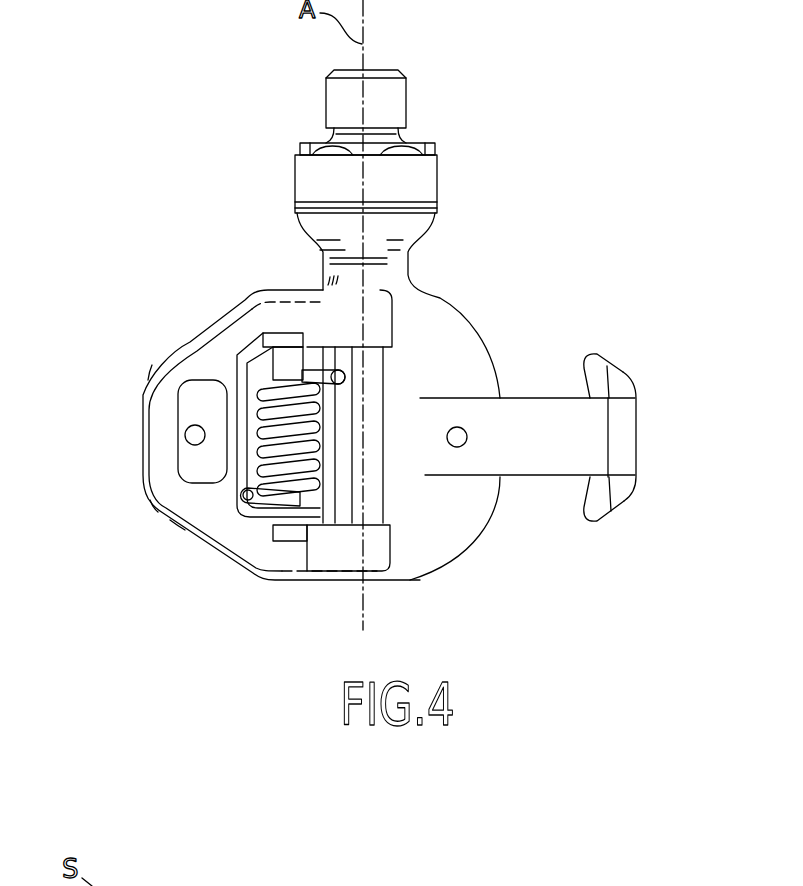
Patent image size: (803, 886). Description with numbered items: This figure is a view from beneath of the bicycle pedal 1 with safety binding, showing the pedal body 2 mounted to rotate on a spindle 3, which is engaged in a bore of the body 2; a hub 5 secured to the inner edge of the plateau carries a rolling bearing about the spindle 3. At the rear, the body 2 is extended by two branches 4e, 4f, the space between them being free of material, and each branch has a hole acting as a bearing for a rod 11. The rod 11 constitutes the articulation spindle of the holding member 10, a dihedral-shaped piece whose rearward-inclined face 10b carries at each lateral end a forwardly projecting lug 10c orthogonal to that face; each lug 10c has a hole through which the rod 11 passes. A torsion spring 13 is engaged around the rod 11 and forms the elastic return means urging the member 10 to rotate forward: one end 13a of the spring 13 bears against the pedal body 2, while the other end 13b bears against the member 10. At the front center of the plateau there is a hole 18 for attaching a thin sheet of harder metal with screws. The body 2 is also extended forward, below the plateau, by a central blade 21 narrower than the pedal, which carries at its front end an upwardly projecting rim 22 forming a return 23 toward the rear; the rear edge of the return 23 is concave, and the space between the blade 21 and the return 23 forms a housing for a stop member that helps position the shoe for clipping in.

The bicycle pedal 1 is at (470, 182).
The pedal body 2 is at (437, 537).
The spindle 3 is at (338, 105).
The hub 5 is at (310, 182).
The branch 4e is at (226, 355).
The branch 4f is at (245, 500).
The holding member 10 is at (225, 375).
The face of the dihedron 10b is at (230, 467).
The lug 10c is at (262, 340).
The rod 11 is at (288, 537).
The torsion spring 13 is at (285, 474).
The end of the spring 13a is at (347, 374).
The end of the spring 13b is at (258, 524).
The hole 18 is at (462, 428).
The central blade 21 is at (520, 453).
The upwardly projecting rim 22 is at (623, 425).
The return 23 is at (598, 503).